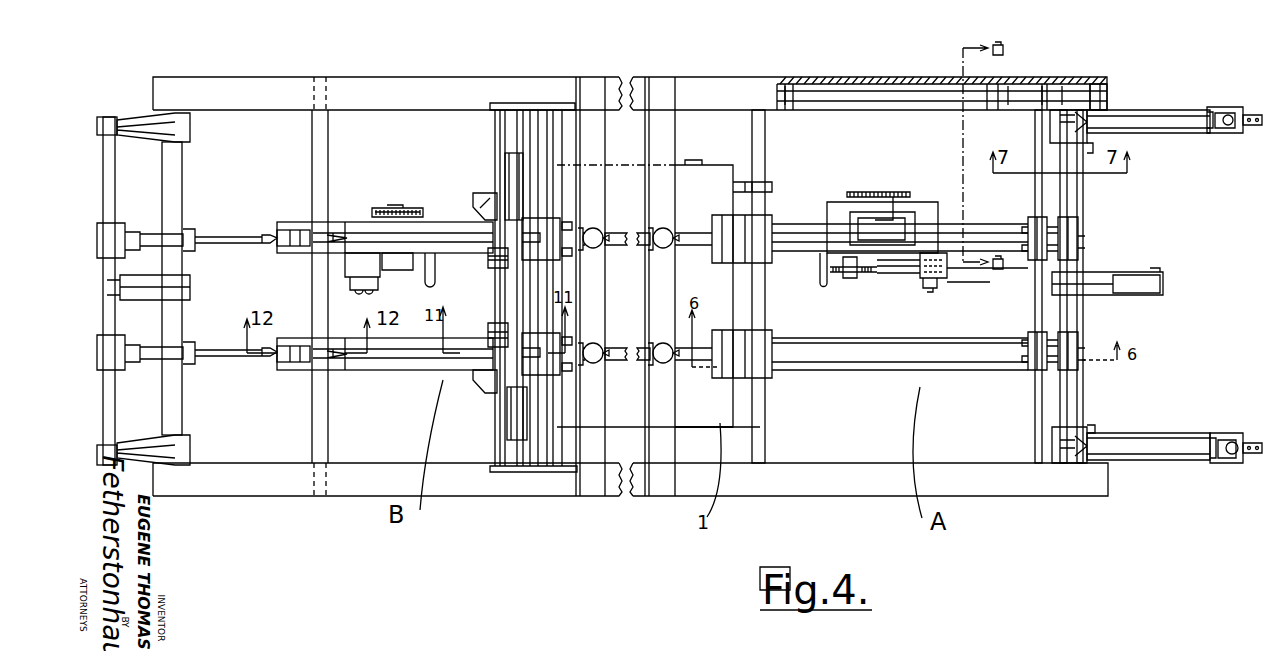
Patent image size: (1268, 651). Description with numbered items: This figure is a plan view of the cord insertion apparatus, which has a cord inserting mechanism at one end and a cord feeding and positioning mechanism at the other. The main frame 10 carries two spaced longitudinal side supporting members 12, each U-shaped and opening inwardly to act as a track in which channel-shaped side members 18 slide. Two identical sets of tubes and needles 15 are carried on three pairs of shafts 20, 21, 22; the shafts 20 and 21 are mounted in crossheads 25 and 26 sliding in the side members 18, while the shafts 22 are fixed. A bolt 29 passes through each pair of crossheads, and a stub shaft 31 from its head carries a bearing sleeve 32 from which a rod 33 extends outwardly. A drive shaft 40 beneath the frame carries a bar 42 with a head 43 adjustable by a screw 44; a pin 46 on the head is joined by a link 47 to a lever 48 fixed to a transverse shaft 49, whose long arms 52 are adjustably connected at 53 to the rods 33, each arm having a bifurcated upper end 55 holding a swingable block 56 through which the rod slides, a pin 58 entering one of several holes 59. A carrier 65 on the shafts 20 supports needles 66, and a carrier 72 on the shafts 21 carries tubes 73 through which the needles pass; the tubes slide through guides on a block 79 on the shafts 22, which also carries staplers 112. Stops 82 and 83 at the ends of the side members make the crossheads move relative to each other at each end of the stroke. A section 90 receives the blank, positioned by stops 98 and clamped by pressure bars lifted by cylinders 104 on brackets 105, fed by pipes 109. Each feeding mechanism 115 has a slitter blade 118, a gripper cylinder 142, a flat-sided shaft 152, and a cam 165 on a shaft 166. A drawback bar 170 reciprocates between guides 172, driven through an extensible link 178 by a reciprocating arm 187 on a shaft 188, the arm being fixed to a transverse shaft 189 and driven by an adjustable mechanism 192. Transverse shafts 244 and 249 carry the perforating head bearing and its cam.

The main frame 10 is at (1035, 488).
The side supporting members 12 is at (870, 78).
The sets of tubes and needles 15 is at (785, 222).
The channel-shaped side members 18 is at (897, 98).
The shafts 20 is at (1072, 397).
The shafts 21 is at (1040, 410).
The shafts 22 is at (762, 438).
The crossheads 25 is at (1062, 90).
The crossheads 26 is at (1012, 85).
The bolt 29 is at (1044, 92).
The stub shaft 31 is at (1088, 142).
The bearing sleeve 32 is at (1080, 130).
The rod 33 is at (1140, 110).
The drive shaft 40 is at (887, 208).
The bar 42 is at (872, 277).
The head 43 is at (915, 280).
The adjusting screw 44 is at (858, 280).
The pin 46 is at (938, 290).
The link 47 is at (965, 282).
The lever 48 is at (1160, 272).
The shaft 49 is at (1077, 313).
The arm 52 is at (1188, 130).
The adjustable connection 53 is at (1232, 105).
The bifurcated upper end 55 is at (1218, 105).
The block 56 is at (1232, 125).
The pin 58 is at (1228, 125).
The holes 59 is at (1245, 455).
The carrier 65 is at (1080, 240).
The needles 66 is at (1091, 229).
The carrier 72 is at (1022, 228).
The tubes 73 is at (812, 232).
The block 79 is at (768, 370).
The stops 82 is at (1092, 88).
The stops 83 is at (793, 77).
The section 90 is at (610, 110).
The stops 98 is at (607, 165).
The cylinders 104 is at (660, 252).
The brackets 105 is at (660, 482).
The pipes 109 is at (662, 340).
The staplers 112 is at (740, 367).
The cord feeding and positioning mechanisms 115 is at (432, 220).
The slitter blade 118 is at (463, 237).
The cylinder 142 is at (508, 170).
The transverse shaft 152 is at (515, 423).
The cam 165 is at (492, 325).
The transverse shaft 166 is at (497, 128).
The drawback bar 170 is at (320, 218).
The guides 172 is at (342, 220).
The extensible link 178 is at (232, 235).
The reciprocating arm 187 is at (150, 120).
The shaft 188 is at (110, 192).
The shaft 189 is at (197, 160).
The adjustable mechanism 192 is at (405, 268).
The shaft 244 is at (548, 462).
The shaft 249 is at (535, 462).